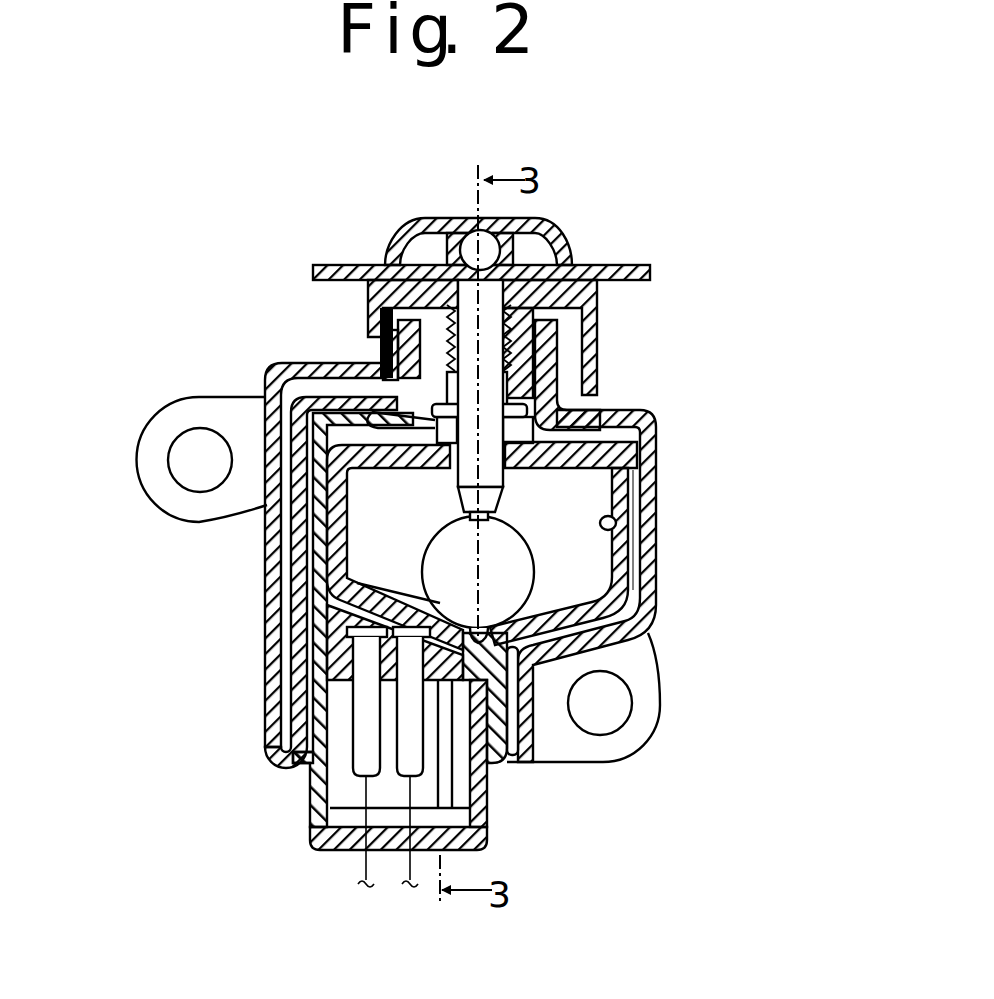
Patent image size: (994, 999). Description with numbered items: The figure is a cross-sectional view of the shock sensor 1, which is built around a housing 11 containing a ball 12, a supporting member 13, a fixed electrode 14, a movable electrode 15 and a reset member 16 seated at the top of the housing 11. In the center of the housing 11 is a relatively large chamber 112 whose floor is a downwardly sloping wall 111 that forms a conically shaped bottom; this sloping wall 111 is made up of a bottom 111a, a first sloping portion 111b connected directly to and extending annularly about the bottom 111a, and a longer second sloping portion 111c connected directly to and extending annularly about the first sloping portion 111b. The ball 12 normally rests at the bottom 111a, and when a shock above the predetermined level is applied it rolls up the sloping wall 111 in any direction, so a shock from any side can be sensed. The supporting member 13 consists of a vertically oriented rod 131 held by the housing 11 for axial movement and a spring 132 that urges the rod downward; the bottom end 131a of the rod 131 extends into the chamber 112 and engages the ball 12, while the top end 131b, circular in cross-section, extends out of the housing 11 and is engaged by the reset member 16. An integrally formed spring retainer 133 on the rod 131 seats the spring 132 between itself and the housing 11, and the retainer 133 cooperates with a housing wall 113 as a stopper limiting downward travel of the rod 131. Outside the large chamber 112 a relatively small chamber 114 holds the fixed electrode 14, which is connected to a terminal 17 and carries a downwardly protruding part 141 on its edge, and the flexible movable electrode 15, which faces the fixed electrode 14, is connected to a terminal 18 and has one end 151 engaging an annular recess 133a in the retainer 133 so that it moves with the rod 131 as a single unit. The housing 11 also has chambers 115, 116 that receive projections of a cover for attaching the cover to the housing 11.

The shock sensor 1 is at (263, 265).
The housing 11 is at (664, 584).
The sloping wall 111 is at (425, 568).
The bottom 111a is at (535, 680).
The first sloping portion 111b is at (295, 721).
The second sloping portion 111c is at (312, 652).
The chamber 112 is at (615, 525).
The housing wall 113 is at (400, 548).
The small chamber 114 is at (297, 396).
The chamber 115 is at (267, 505).
The chamber 116 is at (633, 557).
The ball 12 is at (630, 637).
The supporting member 13 is at (506, 301).
The rod 131 is at (489, 436).
The bottom end 131a is at (483, 503).
The top end 131b is at (470, 231).
The spring 132 is at (450, 322).
The spring retainer 133 is at (400, 318).
The annular recess 133a is at (450, 380).
The fixed electrode 14 is at (290, 438).
The protruding part 141 is at (340, 383).
The movable electrode 15 is at (460, 457).
The end 151 is at (590, 380).
The reset member 16 is at (556, 219).
The terminal 17 is at (367, 753).
The terminal 18 is at (420, 758).